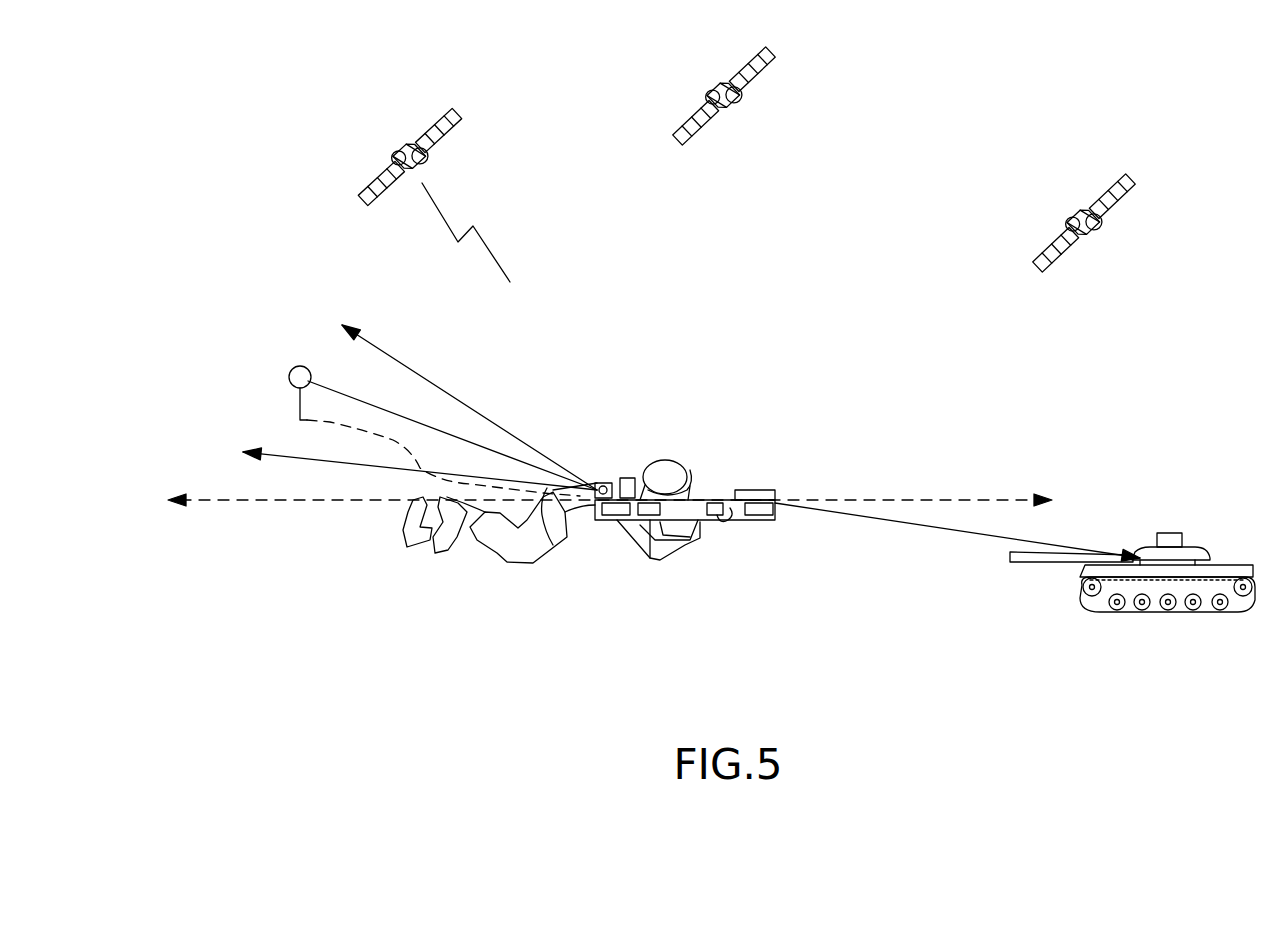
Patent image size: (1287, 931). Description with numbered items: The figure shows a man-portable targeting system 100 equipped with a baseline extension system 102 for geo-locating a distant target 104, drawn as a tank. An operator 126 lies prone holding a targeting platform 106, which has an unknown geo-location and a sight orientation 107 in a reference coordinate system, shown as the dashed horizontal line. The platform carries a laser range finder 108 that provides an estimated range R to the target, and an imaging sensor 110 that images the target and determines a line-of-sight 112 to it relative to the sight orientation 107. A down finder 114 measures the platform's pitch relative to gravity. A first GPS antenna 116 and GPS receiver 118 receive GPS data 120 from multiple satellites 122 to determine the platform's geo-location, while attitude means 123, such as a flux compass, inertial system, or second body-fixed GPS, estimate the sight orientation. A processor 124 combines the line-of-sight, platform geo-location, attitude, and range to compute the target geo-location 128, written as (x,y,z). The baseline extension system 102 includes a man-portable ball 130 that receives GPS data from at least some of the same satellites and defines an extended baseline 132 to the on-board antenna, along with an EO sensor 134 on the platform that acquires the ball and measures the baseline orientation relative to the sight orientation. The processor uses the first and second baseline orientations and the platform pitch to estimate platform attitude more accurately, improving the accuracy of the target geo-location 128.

The man-portable targeting system 100 is at (669, 384).
The baseline extension system 102 is at (326, 348).
The target 104 is at (1154, 630).
The targeting platform 106 is at (676, 521).
The sight orientation 107 is at (890, 498).
The laser range finder 108 is at (762, 490).
The imaging sensor 110 is at (760, 520).
The line-of-sight 112 is at (988, 537).
The down finder 114 is at (628, 486).
The first GPS antenna 116 is at (606, 485).
The GPS receiver 118 is at (614, 517).
The GPS data 120 is at (440, 207).
The satellites 122 is at (383, 177).
The attitude means 123 is at (712, 521).
The processor 124 is at (653, 523).
The operator 126 is at (515, 562).
The geo-location 128 is at (1237, 503).
The man-portable ball 130 is at (292, 368).
The extended baseline 132 is at (416, 422).
The EO sensor 134 is at (586, 524).